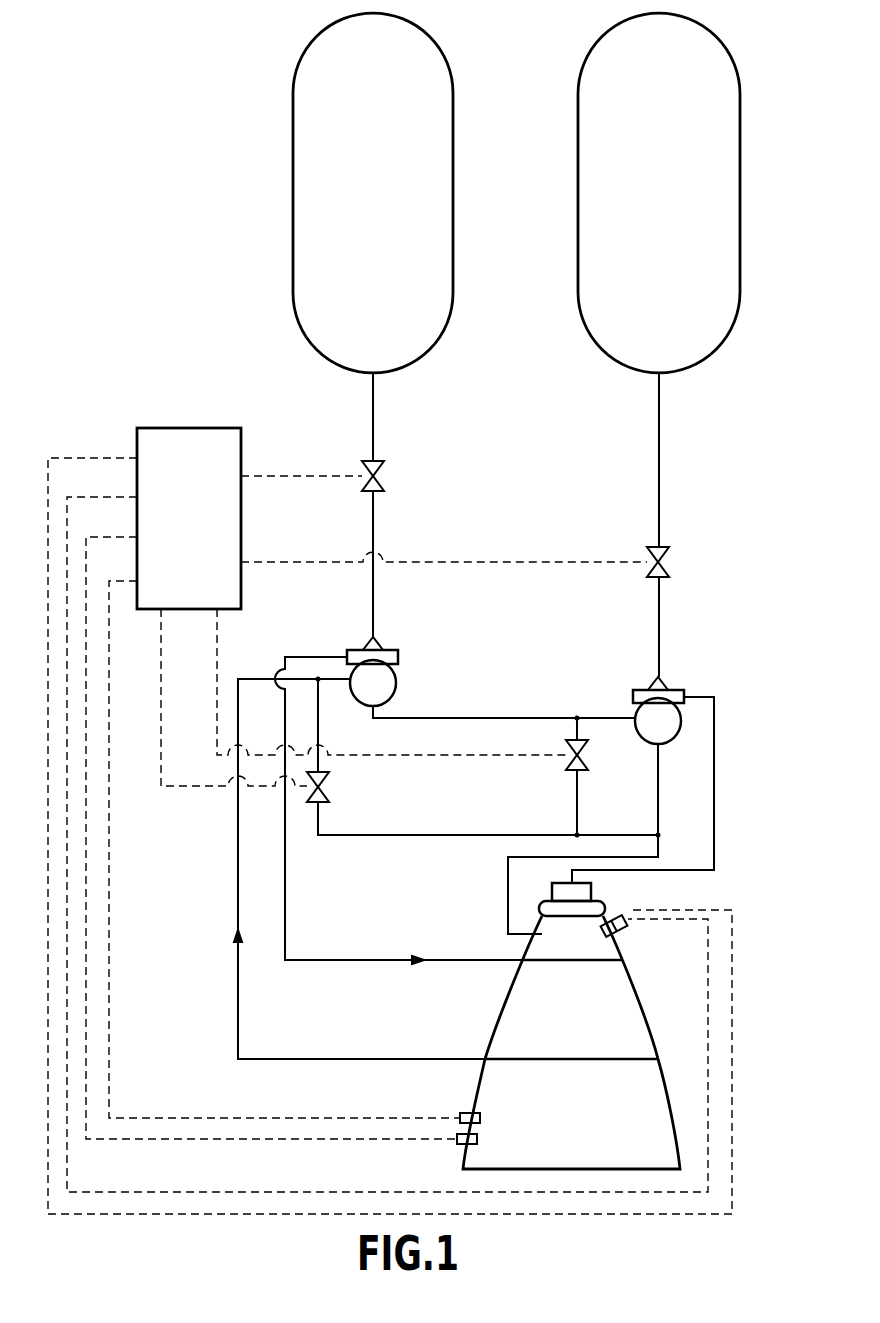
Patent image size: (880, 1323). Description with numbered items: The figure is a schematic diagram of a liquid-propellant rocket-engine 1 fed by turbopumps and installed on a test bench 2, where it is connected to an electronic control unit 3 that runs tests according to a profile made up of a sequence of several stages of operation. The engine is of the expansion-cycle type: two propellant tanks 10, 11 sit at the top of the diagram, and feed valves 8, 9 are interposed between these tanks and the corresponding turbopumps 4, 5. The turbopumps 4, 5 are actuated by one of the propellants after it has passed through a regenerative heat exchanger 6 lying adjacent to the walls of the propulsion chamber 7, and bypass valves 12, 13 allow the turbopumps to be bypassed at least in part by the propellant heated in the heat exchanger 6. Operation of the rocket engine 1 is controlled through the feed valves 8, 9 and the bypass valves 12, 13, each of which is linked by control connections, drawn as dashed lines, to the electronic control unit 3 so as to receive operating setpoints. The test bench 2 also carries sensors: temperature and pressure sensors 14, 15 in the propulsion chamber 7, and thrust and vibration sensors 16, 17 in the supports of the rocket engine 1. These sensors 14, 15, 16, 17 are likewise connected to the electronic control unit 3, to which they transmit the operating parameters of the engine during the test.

The liquid-propellant rocket-engine 1 is at (756, 711).
The test bench 2 is at (122, 100).
The electronic control unit 3 is at (183, 536).
The turbopump 4 is at (397, 670).
The turbopump 5 is at (676, 740).
The regenerative heat exchanger 6 is at (566, 1017).
The propulsion chamber 7 is at (568, 1125).
The feed valve 8 is at (384, 476).
The feed valve 9 is at (669, 562).
The tank 10 is at (361, 201).
The tank 11 is at (647, 201).
The bypass valve 12 is at (329, 787).
The bypass valve 13 is at (588, 755).
The temperature and pressure sensor 14 is at (464, 1113).
The temperature and pressure sensor 15 is at (461, 1145).
The thrust and vibration sensor 16 is at (622, 934).
The thrust and vibration sensor 17 is at (611, 916).